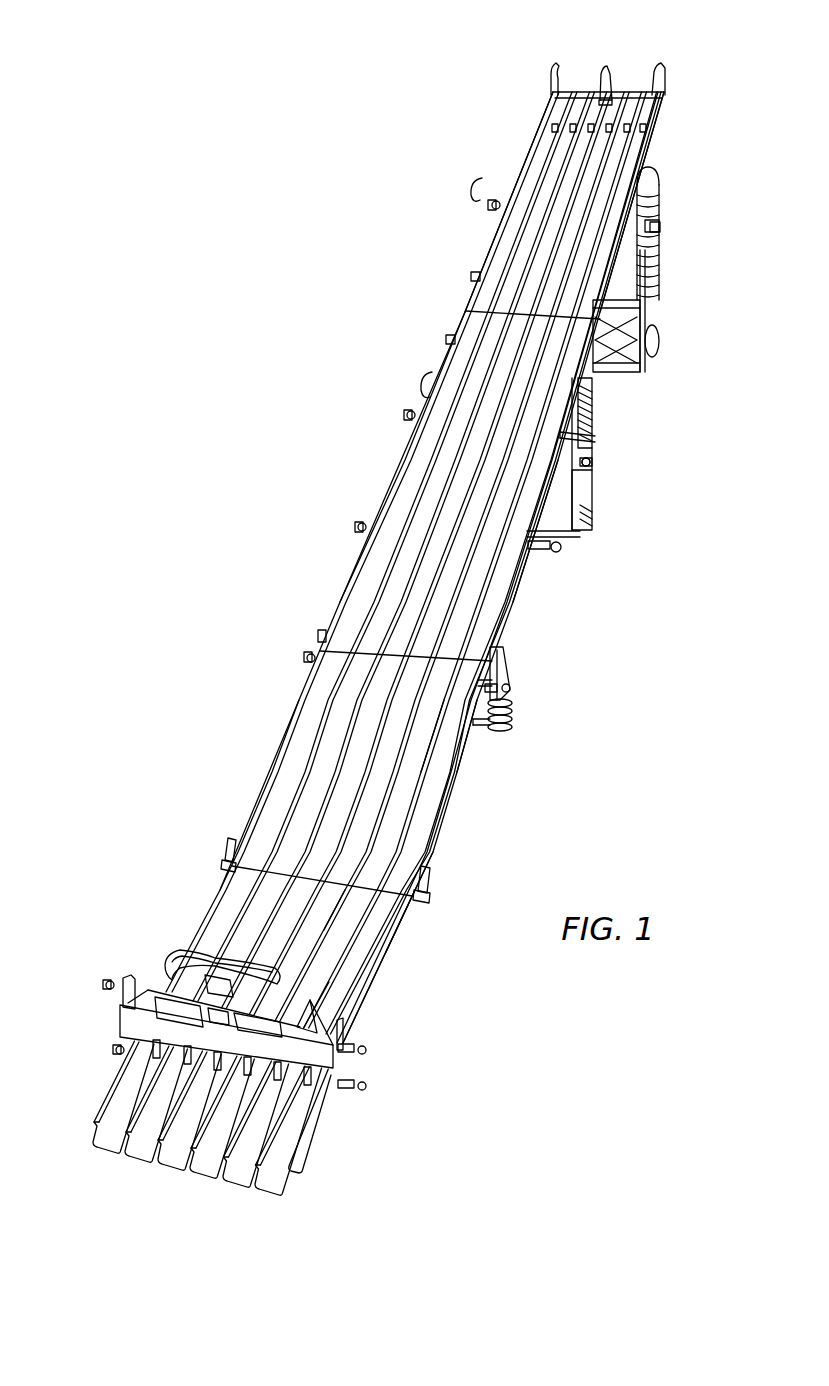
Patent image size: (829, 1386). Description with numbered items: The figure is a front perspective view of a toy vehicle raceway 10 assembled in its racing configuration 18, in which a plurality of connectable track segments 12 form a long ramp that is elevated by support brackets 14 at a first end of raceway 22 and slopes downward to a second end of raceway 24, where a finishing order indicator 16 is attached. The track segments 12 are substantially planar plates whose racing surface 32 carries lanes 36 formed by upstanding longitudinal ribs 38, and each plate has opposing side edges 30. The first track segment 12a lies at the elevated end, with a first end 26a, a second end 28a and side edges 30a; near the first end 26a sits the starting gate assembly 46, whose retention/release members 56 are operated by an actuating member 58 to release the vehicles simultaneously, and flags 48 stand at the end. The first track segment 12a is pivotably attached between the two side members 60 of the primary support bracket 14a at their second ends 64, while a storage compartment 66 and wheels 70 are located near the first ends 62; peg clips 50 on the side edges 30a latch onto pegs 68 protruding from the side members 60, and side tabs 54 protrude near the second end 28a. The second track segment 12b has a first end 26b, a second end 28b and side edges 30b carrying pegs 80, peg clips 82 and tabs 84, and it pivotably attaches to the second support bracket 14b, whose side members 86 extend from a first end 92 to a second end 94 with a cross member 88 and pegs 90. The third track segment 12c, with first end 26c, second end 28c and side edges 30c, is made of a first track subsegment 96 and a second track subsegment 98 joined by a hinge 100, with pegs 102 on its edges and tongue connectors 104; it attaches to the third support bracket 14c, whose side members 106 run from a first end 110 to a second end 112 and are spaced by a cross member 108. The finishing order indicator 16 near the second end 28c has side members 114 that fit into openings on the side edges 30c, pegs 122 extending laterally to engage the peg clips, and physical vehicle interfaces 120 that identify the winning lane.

The toy vehicle raceway 10 is at (415, 629).
The racing configuration 18 is at (415, 629).
The connectable track segments 12 is at (248, 625).
The first track segment 12a is at (550, 199).
The second track segment 12b is at (439, 461).
The third track segment 12c is at (275, 880).
The support brackets 14 is at (622, 450).
The primary support bracket 14a is at (659, 268).
The second support bracket 14b is at (592, 467).
The third support bracket 14c is at (531, 689).
The finishing order indicator 16 is at (165, 975).
The first end of raceway 22 is at (617, 81).
The second end of raceway 24 is at (248, 1076).
The first end of first track segment 26a is at (550, 186).
The first end of second track segment 26b is at (439, 440).
The first end of third track segment 26c is at (275, 849).
The second end of first track segment 28a is at (550, 199).
The second end of second track segment 28b is at (439, 461).
The second end of third track segment 28c is at (275, 880).
The side edges 30 is at (208, 1134).
The side edges of first track segment 30a is at (540, 130).
The side edges of second track segment 30b is at (350, 580).
The side edges of third track segment 30c is at (305, 695).
The racing surface 32 is at (455, 745).
The lanes 36 is at (324, 928).
The upstanding longitudinal ribs 38 is at (299, 977).
The starting gate assembly 46 is at (682, 88).
The flags 48 is at (553, 75).
The peg clips 50 is at (492, 205).
The side tabs 54 is at (475, 275).
The retention/release members 56 is at (603, 128).
The actuating member 58 is at (610, 70).
The side members 60 is at (662, 246).
The first end of side members 62 is at (651, 323).
The second end of side members 64 is at (681, 220).
The storage compartment 66 is at (632, 365).
The pegs 68 is at (662, 226).
The wheels 70 is at (661, 345).
The pegs 80 is at (365, 525).
The peg clips 82 is at (412, 415).
The tabs 84 is at (448, 340).
The side members 86 is at (575, 475).
The cross member 88 is at (568, 533).
The pegs 90 is at (592, 472).
The first end of side members 92 is at (600, 517).
The second end of side members 94 is at (602, 383).
The first track subsegment 96 is at (460, 795).
The second track subsegment 98 is at (400, 950).
The hinge 100 is at (232, 852).
The pegs 102 is at (313, 658).
The tongue connectors 104 is at (220, 1182).
The side members 106 is at (515, 712).
The cross member 108 is at (478, 726).
The first end of side members 110 is at (531, 689).
The second end of side members 112 is at (510, 656).
The side members 114 is at (125, 1020).
The physical vehicle interfaces 120 is at (280, 1070).
The pegs 122 is at (110, 985).